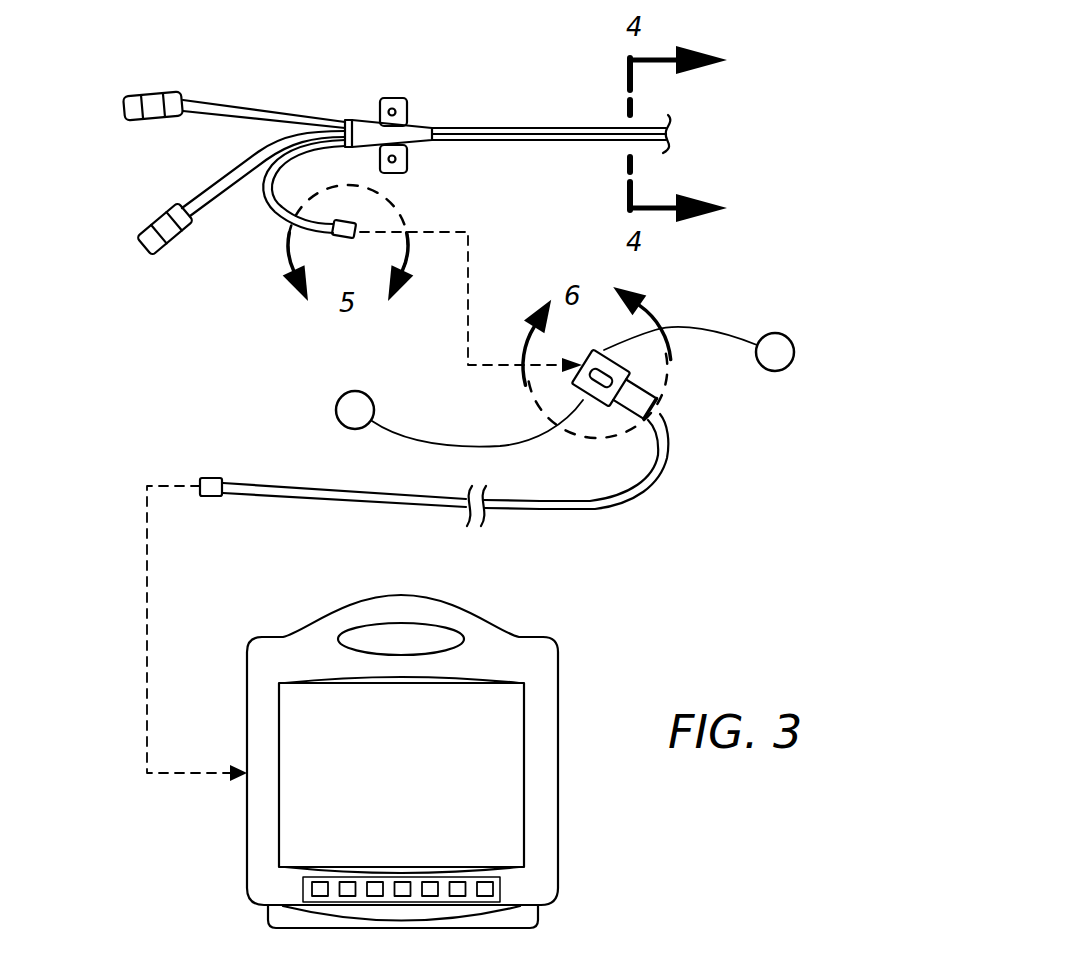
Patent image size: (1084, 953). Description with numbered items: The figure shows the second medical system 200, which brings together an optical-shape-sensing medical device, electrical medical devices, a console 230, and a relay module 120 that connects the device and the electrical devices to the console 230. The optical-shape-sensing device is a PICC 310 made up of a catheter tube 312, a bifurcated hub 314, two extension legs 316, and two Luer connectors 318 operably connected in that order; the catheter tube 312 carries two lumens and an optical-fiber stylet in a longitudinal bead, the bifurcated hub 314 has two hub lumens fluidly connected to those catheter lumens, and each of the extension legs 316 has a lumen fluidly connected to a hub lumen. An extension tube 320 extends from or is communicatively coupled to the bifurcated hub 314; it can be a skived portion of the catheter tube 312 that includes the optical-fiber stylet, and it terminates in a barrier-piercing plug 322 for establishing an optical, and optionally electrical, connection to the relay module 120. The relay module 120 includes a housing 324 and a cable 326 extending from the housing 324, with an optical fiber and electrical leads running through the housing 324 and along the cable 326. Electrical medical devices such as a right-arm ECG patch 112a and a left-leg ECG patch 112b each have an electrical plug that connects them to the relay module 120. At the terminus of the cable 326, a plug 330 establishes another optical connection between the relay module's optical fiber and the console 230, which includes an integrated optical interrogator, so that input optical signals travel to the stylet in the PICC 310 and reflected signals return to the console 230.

The PICC 310 is at (148, 38).
The catheter tube 312 is at (470, 127).
The bifurcated hub 314 is at (352, 122).
The extension legs 316 is at (218, 110).
The Luer connectors 318 is at (128, 98).
The extension tube 320 is at (270, 190).
The barrier-piercing plug 322 is at (358, 224).
The housing 324 is at (631, 369).
The cable 326 is at (633, 503).
The plug 330 is at (210, 476).
The second medical system 200 is at (745, 98).
The relay module 120 is at (712, 468).
The ECG patch 112a is at (348, 392).
The ECG patch 112b is at (782, 333).
The console 230 is at (556, 635).